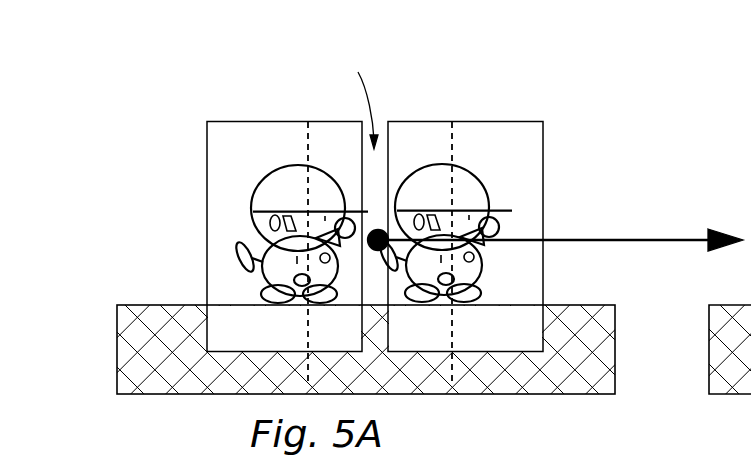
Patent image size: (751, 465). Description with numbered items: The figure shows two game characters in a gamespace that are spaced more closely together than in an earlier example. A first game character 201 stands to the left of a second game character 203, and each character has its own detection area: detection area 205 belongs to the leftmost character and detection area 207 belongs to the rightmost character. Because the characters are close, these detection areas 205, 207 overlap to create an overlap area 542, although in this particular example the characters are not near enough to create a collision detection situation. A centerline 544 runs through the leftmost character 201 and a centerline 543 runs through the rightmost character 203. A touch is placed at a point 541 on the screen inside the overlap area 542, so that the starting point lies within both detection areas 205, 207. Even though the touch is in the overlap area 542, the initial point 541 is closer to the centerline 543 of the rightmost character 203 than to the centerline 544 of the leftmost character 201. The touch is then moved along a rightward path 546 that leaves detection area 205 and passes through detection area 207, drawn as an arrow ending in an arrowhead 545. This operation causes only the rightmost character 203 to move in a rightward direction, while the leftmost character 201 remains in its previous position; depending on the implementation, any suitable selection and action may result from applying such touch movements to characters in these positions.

The first game character 201 is at (243, 194).
The second game character 203 is at (497, 187).
The detection area 205 is at (234, 121).
The detection area 207 is at (520, 121).
The point 541 is at (378, 230).
The overlap area 542 is at (355, 98).
The centerline 543 is at (453, 147).
The centerline 544 is at (310, 146).
The arrowhead of direction indicator 545 is at (720, 231).
The rightward path 546 is at (608, 239).